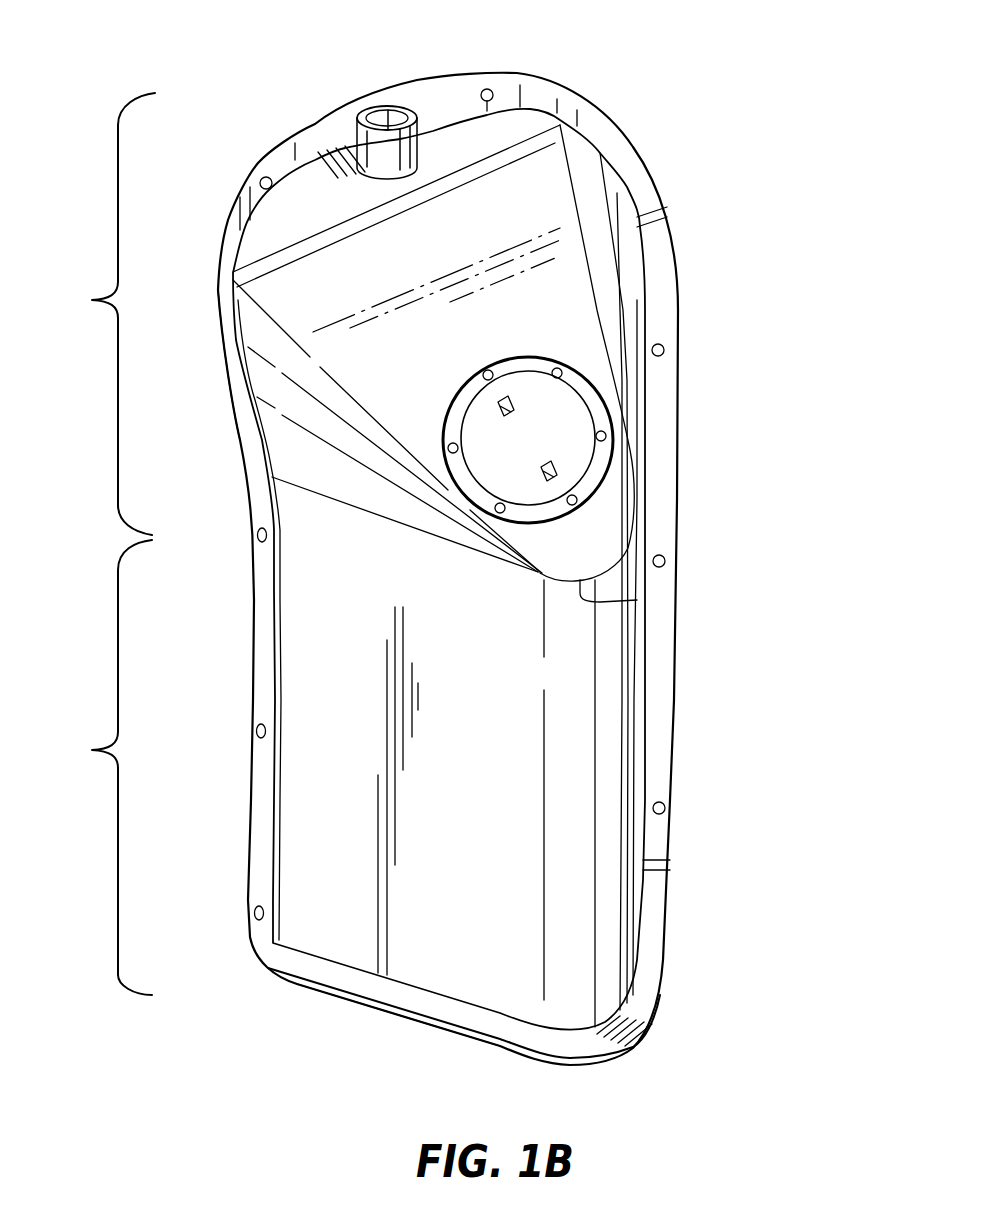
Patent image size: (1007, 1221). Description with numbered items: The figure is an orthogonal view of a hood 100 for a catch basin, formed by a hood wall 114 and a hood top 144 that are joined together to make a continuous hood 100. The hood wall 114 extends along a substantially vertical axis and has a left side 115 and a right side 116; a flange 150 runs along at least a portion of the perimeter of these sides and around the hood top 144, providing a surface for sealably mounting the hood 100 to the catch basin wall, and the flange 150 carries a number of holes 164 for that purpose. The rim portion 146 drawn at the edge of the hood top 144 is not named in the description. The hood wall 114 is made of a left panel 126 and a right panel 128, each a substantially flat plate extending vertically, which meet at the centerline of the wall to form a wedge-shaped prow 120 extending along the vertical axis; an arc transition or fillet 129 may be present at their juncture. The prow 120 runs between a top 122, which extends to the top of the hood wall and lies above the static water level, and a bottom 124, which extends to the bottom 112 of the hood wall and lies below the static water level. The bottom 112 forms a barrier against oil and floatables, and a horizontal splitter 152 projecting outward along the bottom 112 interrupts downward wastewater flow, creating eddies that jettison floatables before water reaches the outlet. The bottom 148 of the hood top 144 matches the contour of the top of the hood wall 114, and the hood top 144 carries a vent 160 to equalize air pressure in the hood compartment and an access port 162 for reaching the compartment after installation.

The hood 100 is at (725, 273).
The bottom of the hood wall 112 is at (650, 1037).
The hood wall 114 is at (100, 767).
The left side 115 is at (229, 344).
The right side 116 is at (660, 673).
The prow 120 is at (592, 730).
The top of the prow 122 is at (613, 567).
The bottom of the prow 124 is at (660, 993).
The left panel 126 is at (473, 866).
The right panel 128 is at (638, 745).
The fillet 129 is at (640, 600).
The hood top 144 is at (680, 143).
The rim 146 is at (340, 127).
The bottom of the hood top 148 is at (603, 557).
The flange 150 is at (256, 477).
The splitter 152 is at (672, 913).
The vent 160 is at (408, 148).
The access port 162 is at (573, 440).
The holes 164 is at (493, 97).